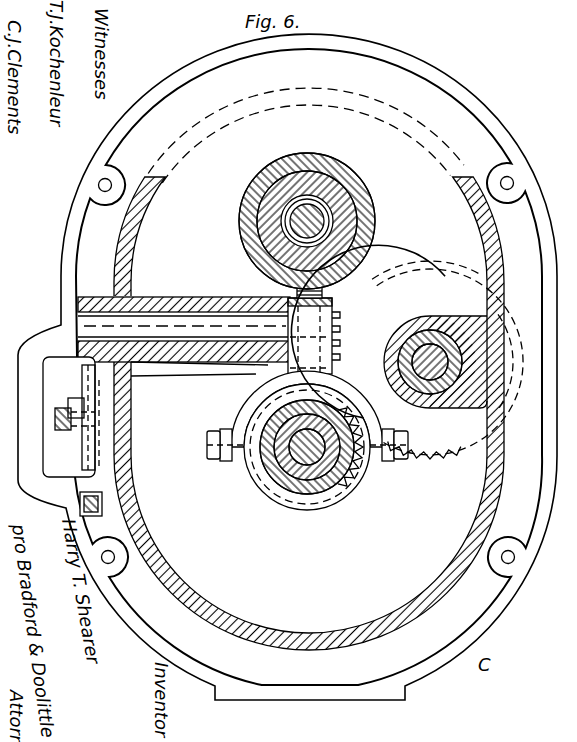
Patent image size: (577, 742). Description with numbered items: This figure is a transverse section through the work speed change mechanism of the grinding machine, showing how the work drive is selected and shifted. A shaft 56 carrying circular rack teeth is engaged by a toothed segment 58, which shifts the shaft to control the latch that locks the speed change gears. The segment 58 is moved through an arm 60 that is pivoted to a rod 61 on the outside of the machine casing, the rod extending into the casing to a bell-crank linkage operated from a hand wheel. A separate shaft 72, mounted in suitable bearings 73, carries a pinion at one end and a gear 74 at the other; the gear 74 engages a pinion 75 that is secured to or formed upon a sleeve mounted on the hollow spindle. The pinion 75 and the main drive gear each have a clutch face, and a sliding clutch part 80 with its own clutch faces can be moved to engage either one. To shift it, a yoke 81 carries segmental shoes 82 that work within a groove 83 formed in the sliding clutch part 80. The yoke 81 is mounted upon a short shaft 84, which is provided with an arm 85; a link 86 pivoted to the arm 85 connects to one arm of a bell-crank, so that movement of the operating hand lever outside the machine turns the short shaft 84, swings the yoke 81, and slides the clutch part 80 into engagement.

The shaft 56 is at (312, 224).
The segment 58 is at (333, 284).
The arm 60 is at (66, 402).
The rod 61 is at (58, 436).
The shaft 72 is at (398, 350).
The bearings 73 is at (431, 316).
The gear 74 is at (466, 437).
The pinion 75 is at (399, 456).
The sliding clutch part 80 is at (270, 491).
The yoke 81 is at (234, 411).
The segmental shoes 82 is at (353, 474).
The groove 83 is at (331, 500).
The short shaft 84 is at (190, 323).
The arm 85 is at (97, 452).
The link 86 is at (100, 530).